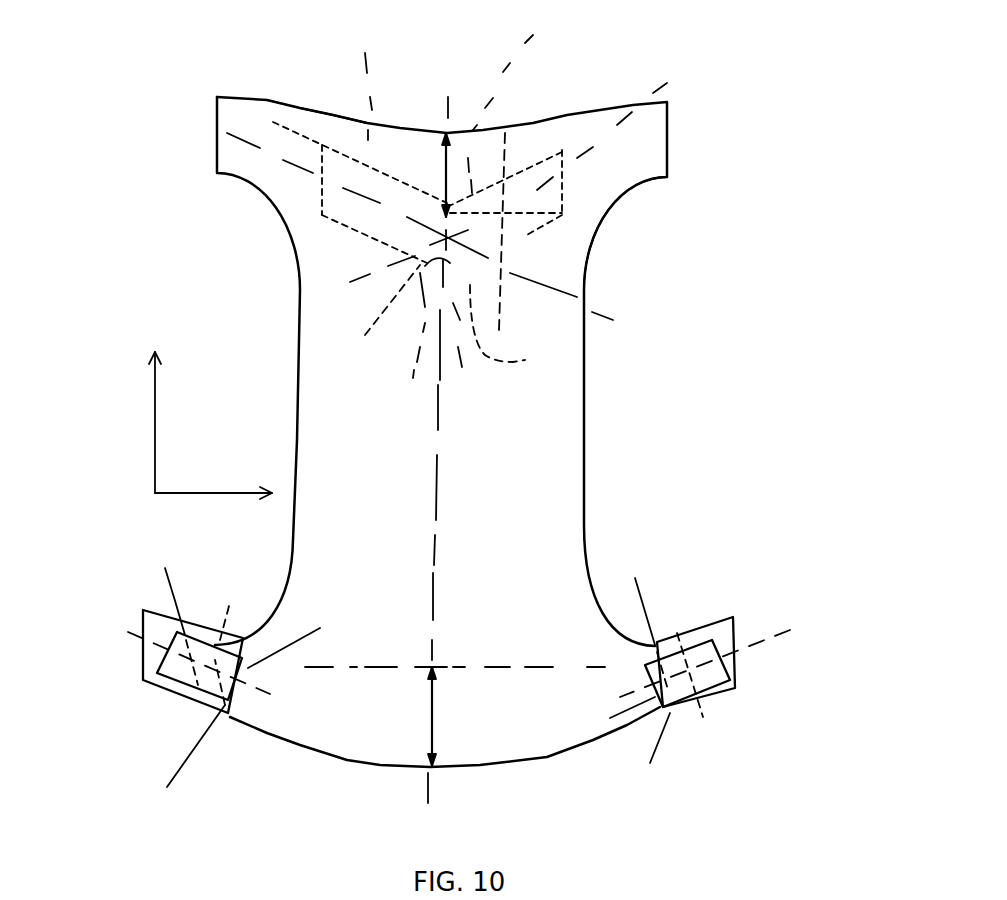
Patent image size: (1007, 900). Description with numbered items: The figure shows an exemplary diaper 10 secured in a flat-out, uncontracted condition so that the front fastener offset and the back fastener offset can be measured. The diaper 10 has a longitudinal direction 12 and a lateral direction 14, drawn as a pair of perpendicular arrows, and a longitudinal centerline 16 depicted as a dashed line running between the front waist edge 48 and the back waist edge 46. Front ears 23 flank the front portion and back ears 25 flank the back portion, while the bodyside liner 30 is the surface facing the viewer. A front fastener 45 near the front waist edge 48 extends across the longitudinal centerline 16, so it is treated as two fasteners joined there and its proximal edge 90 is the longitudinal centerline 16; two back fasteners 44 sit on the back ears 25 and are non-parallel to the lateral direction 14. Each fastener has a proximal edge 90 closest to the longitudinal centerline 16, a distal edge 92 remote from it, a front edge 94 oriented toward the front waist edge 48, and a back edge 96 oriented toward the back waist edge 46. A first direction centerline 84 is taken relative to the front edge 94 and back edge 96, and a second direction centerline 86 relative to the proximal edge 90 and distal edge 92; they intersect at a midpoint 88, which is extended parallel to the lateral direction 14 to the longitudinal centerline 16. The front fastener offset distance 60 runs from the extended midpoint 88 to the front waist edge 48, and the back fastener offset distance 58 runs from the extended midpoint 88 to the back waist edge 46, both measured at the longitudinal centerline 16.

The diaper 10 is at (652, 418).
The longitudinal direction 12 is at (153, 428).
The lateral direction 14 is at (212, 493).
The longitudinal centerline 16 is at (450, 108).
The front ears 23 is at (634, 180).
The back ears 25 is at (720, 623).
The bodyside liner 30 is at (545, 514).
The back fastener 44 is at (183, 667).
The front fastener 45 is at (530, 240).
The back waist edge 46 is at (355, 763).
The front waist edge 48 is at (352, 116).
The back fastener offset distance 58 is at (432, 720).
The front fastener offset distance 60 is at (443, 168).
The first direction centerline 84 is at (207, 122).
The second direction centerline 86 is at (508, 127).
The midpoint 88 is at (508, 200).
The proximal edge 90 is at (451, 558).
The distal edge 92 is at (273, 122).
The front edge 94 is at (409, 346).
The back edge 96 is at (365, 335).